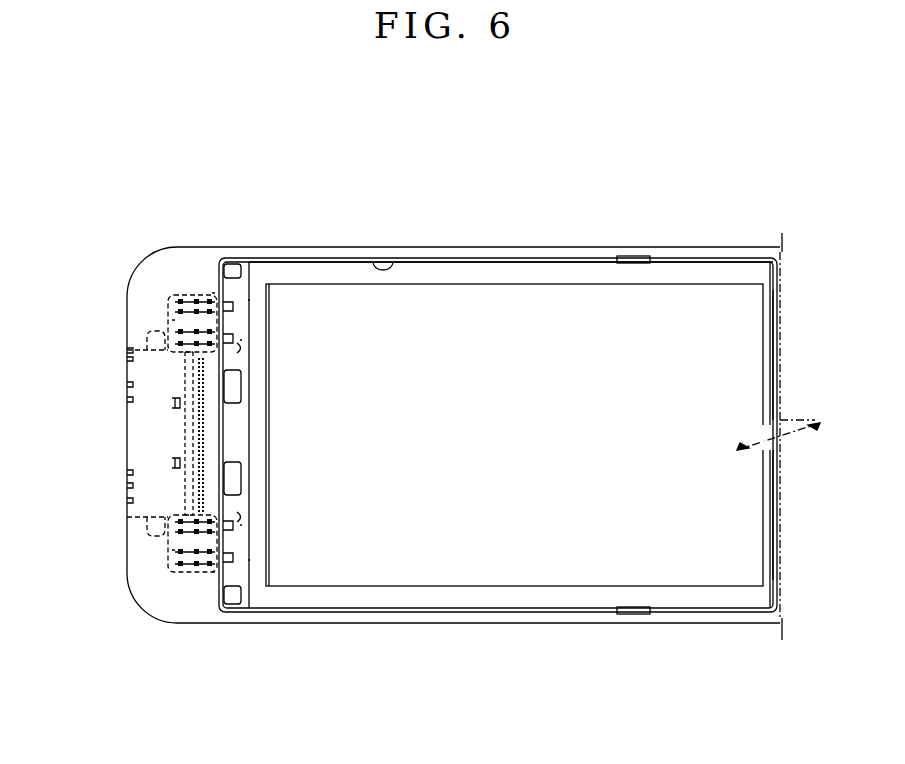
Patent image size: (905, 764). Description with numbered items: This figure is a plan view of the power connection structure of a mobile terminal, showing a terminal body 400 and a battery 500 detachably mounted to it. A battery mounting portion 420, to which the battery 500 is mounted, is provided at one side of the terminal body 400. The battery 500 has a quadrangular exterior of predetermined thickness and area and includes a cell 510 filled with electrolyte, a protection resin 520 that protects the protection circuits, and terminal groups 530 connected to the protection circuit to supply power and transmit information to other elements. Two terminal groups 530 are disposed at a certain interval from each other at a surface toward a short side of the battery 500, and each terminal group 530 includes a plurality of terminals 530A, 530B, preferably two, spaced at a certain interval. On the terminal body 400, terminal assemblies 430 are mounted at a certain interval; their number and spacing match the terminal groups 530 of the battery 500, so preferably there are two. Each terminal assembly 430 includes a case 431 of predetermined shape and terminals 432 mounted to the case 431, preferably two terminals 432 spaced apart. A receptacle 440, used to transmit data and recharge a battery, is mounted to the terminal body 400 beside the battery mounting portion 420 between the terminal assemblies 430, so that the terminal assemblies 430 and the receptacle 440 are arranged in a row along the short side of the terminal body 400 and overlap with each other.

The terminal body 400 is at (170, 622).
The battery mounting portion 420 is at (388, 262).
The terminal assembly 430 is at (177, 294).
The case 431 is at (172, 322).
The terminal 432 is at (213, 293).
The receptacle 440 is at (127, 340).
The battery 500 is at (549, 262).
The cell 510 is at (458, 306).
The protection resin 520 is at (233, 438).
The terminal group 530 is at (237, 192).
The terminal 530A is at (250, 300).
The terminal 530B is at (242, 340).